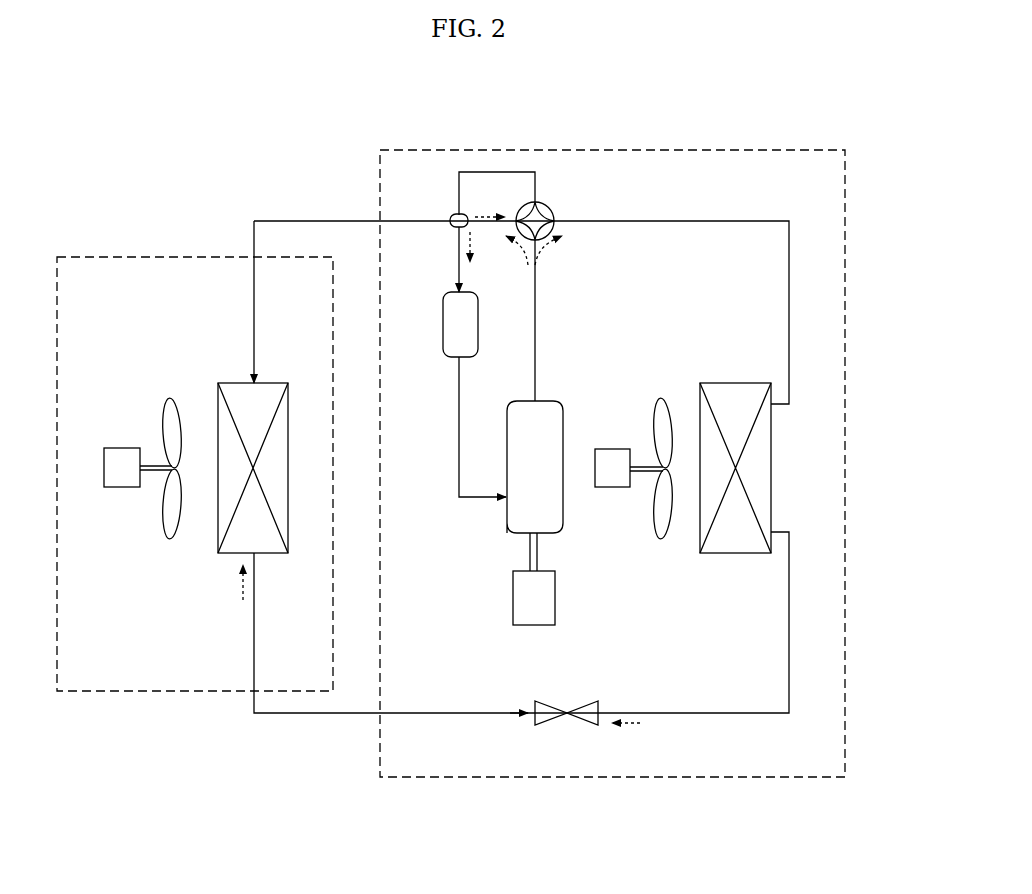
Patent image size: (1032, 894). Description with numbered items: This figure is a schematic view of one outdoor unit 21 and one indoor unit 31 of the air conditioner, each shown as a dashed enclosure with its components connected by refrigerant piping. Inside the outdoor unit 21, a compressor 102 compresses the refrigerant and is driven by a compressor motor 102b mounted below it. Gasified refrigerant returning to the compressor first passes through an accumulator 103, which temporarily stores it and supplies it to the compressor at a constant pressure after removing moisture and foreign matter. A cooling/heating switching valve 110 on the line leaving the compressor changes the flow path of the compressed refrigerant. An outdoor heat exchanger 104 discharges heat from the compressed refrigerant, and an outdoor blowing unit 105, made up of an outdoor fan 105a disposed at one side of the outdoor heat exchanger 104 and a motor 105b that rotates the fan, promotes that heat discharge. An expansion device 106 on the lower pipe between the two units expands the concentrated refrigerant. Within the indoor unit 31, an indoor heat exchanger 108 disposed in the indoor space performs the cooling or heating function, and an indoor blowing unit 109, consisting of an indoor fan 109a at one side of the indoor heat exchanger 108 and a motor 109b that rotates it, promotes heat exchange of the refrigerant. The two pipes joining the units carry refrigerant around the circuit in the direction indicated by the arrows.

The outdoor unit 21 is at (658, 781).
The indoor unit 31 is at (207, 694).
The compressor 102 is at (530, 505).
The compressor motor 102b is at (556, 595).
The accumulator 103 is at (445, 335).
The outdoor heat exchanger 104 is at (752, 451).
The outdoor blowing unit 105 is at (625, 417).
The outdoor fan 105a is at (665, 427).
The motor 105b is at (613, 461).
The expansion device 106 is at (583, 724).
The indoor heat exchanger 108 is at (260, 540).
The indoor blowing unit 109 is at (116, 594).
The indoor fan 109a is at (175, 523).
The motor 109b is at (118, 477).
The cooling/heating switching valve 110 is at (544, 211).